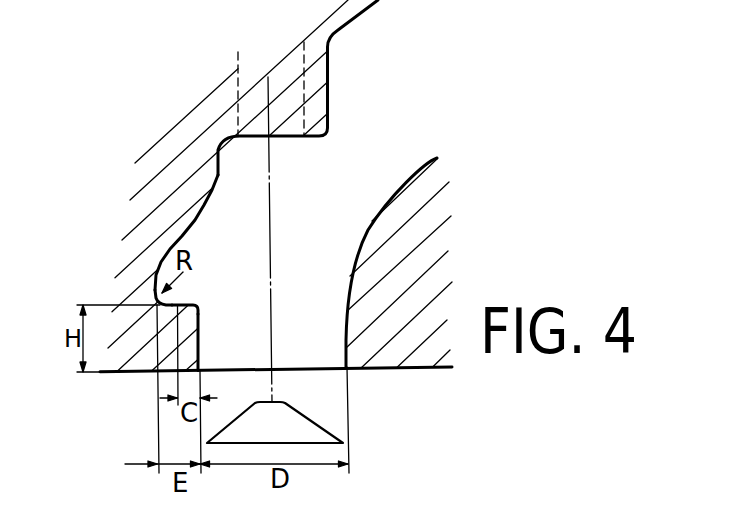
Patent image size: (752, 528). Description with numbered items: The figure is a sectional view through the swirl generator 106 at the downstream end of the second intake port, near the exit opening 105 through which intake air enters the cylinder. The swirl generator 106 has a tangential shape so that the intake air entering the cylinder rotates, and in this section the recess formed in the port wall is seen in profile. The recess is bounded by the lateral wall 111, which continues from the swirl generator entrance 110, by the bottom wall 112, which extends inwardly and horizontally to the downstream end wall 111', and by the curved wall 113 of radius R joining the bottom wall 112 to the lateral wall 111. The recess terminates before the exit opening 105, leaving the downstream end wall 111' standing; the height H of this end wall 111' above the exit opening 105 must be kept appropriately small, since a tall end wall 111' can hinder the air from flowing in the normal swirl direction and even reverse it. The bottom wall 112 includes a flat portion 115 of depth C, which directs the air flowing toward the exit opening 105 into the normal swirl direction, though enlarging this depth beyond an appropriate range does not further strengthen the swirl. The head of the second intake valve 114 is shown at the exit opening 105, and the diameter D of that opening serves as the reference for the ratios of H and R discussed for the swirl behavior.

The exit opening of the second intake port 105 is at (315, 370).
The swirl generator 106 is at (347, 167).
The swirl generator entrance 110 is at (320, 152).
The lateral wall 111 is at (147, 207).
The downstream end wall 111' is at (229, 342).
The bottom wall 112 is at (198, 279).
The curved wall 113 is at (151, 272).
The second intake valve 114 is at (283, 418).
The flat portion 115 is at (187, 304).